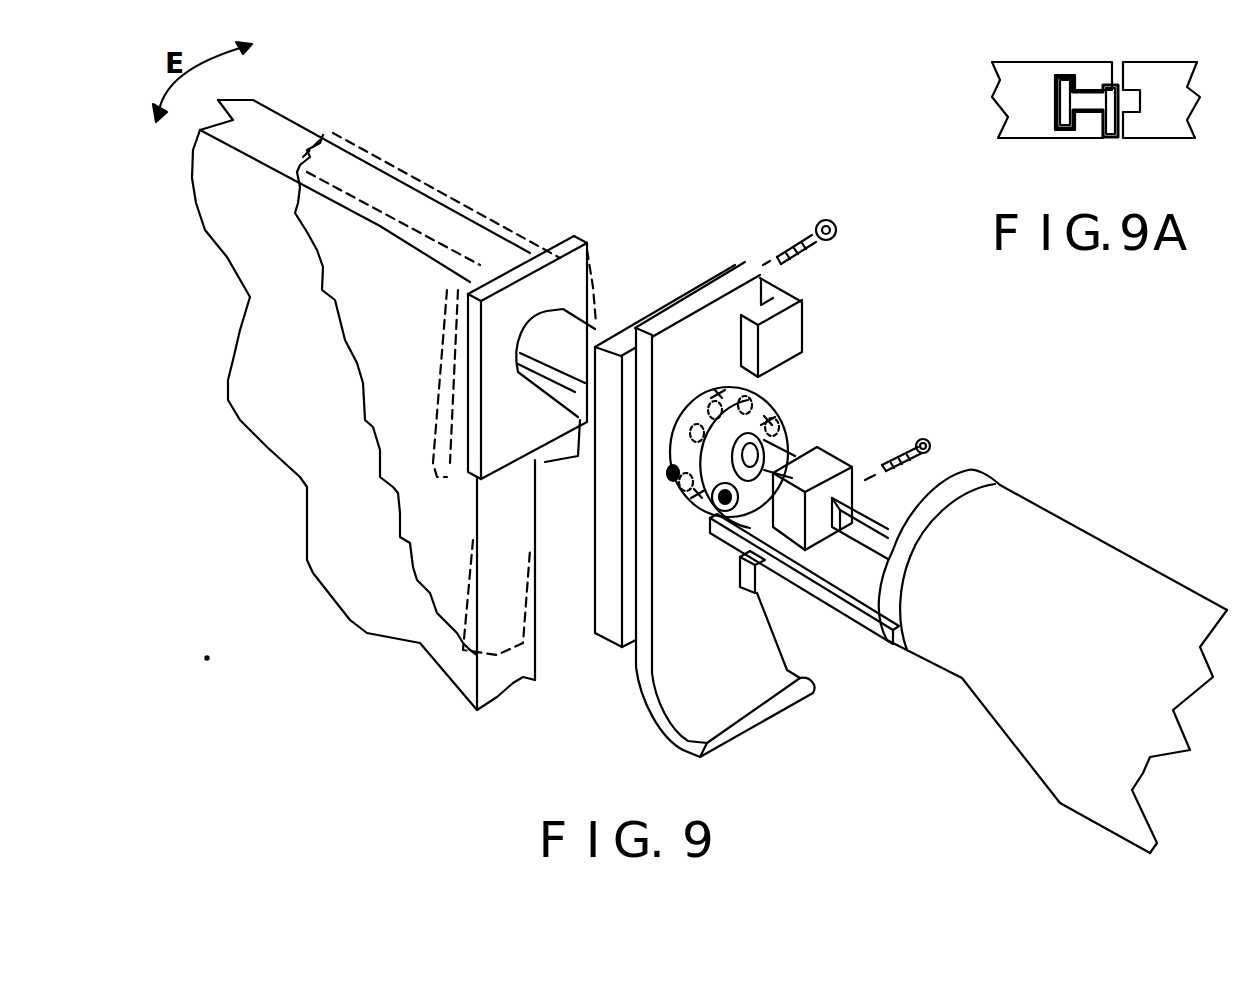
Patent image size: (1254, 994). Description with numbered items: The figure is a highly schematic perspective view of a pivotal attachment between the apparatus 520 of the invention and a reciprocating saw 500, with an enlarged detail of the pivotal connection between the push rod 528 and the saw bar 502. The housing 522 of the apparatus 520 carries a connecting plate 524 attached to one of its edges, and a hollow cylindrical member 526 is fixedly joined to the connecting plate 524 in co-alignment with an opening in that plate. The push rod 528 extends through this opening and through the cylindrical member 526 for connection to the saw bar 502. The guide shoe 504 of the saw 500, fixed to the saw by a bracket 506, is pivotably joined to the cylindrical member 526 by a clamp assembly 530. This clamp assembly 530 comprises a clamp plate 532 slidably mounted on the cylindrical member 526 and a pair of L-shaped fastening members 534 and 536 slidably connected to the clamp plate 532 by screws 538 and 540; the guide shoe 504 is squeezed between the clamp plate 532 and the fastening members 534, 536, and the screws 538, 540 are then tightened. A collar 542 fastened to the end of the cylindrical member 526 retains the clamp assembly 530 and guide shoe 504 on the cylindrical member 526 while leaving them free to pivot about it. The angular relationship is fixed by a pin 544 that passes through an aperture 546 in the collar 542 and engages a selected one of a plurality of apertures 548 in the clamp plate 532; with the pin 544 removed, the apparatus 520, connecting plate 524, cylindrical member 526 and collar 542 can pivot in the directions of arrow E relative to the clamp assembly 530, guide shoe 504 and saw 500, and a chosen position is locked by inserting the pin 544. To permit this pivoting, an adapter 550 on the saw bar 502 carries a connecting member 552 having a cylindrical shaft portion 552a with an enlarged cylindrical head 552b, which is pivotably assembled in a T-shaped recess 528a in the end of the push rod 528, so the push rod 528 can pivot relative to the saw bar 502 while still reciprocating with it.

In FIG. 9, the reciprocating saw 500 is at (1026, 481).
In FIG. 9, the saw bar 502 is at (862, 530).
In FIG. 9, the guide shoe 504 is at (670, 673).
In FIG. 9, the bracket 506 is at (853, 610).
In FIG. 9, the apparatus 520 is at (266, 466).
In FIG. 9, the housing 522 is at (426, 633).
In FIG. 9, the connecting plate 524 is at (598, 278).
In FIG. 9, the cylindrical member 526 is at (548, 360).
In FIG. 9, the push rod 528 is at (767, 447).
In FIG. 9A, the push rod 528 is at (1003, 80).
In FIG. 9A, the T-shaped recess 528a is at (1057, 75).
In FIG. 9, the clamp assembly 530 is at (834, 296).
In FIG. 9, the clamp plate 532 is at (607, 637).
In FIG. 9, the L-shaped fastening member 534 is at (780, 352).
In FIG. 9, the L-shaped fastening member 536 is at (776, 581).
In FIG. 9, the screw 538 is at (838, 222).
In FIG. 9, the screw 540 is at (932, 444).
In FIG. 9, the collar 542 is at (675, 445).
In FIG. 9, the pin 544 is at (770, 412).
In FIG. 9, the aperture 546 is at (715, 490).
In FIG. 9, the apertures 548 is at (742, 387).
In FIG. 9, the adapter 550 is at (822, 460).
In FIG. 9A, the adapter 550 is at (1170, 73).
In FIG. 9A, the connecting member 552 is at (1055, 93).
In FIG. 9A, the cylindrical shaft portion 552a is at (1097, 103).
In FIG. 9A, the enlarged cylindrical head 552b is at (1060, 127).